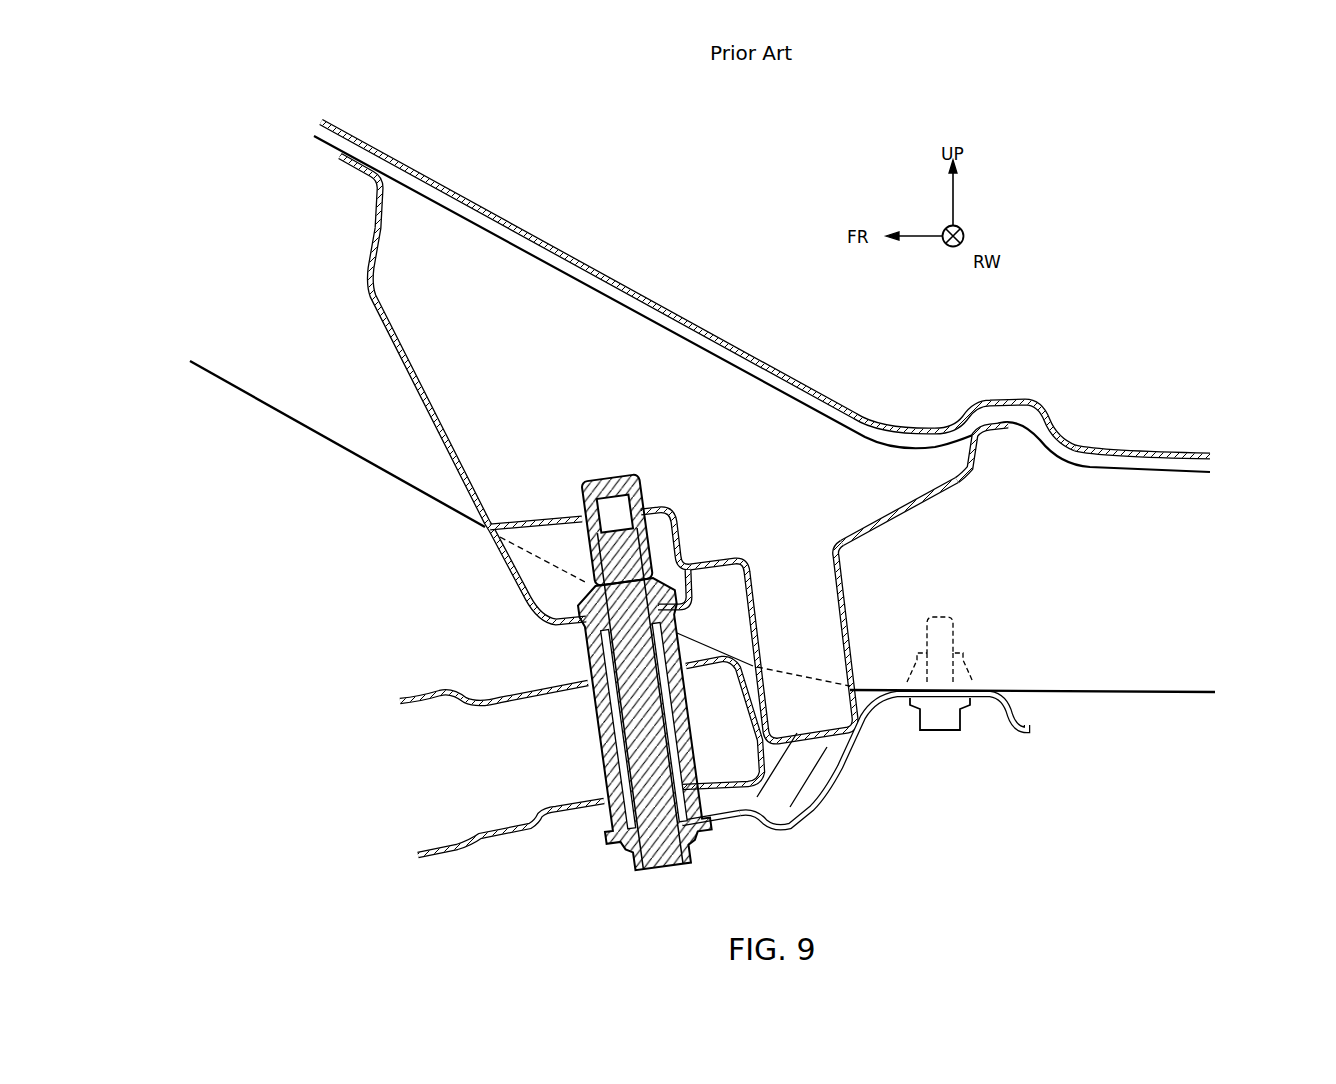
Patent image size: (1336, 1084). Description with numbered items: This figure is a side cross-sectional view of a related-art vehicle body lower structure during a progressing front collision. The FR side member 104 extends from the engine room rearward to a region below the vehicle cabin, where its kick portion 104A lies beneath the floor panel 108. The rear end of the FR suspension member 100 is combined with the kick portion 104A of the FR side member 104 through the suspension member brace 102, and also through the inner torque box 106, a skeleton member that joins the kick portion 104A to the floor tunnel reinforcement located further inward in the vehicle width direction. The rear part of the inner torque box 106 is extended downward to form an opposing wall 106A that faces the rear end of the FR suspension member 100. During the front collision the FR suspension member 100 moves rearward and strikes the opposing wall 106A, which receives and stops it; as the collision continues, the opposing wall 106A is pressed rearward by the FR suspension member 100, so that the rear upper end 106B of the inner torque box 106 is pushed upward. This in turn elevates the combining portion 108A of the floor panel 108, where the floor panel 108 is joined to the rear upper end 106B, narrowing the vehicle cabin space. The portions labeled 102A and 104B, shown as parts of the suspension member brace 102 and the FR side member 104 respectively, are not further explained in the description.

The FR suspension member 100 is at (424, 679).
The suspension member brace 102 is at (722, 785).
The bent portion of second panel 102A is at (826, 822).
The FR side member 104 is at (337, 444).
The kick portion 104A is at (258, 402).
The inner panel portion 104B is at (602, 297).
The inner torque box 106 is at (701, 448).
The opposing wall 106A is at (767, 690).
The rear upper end 106B is at (993, 428).
The floor panel 108 is at (765, 289).
The combining portion 108A is at (998, 400).